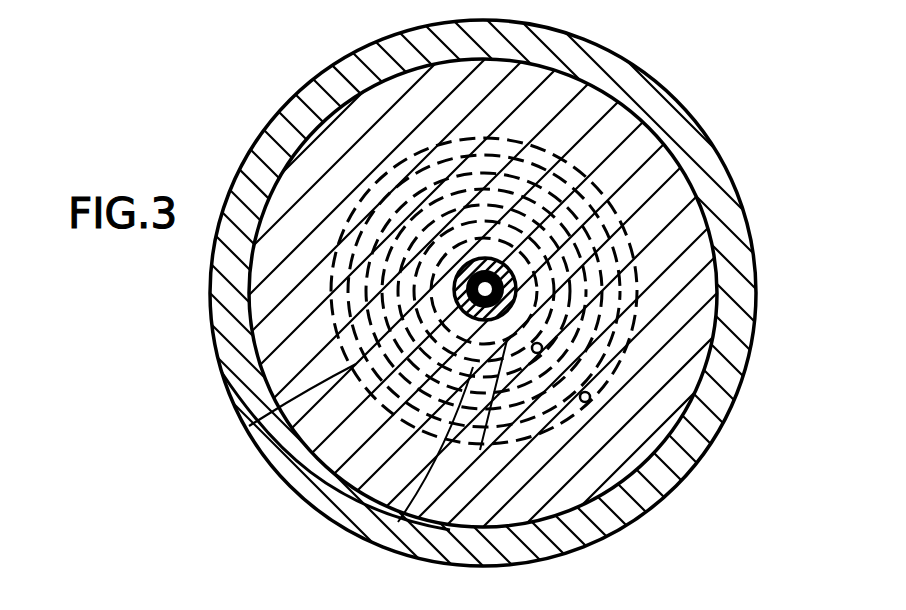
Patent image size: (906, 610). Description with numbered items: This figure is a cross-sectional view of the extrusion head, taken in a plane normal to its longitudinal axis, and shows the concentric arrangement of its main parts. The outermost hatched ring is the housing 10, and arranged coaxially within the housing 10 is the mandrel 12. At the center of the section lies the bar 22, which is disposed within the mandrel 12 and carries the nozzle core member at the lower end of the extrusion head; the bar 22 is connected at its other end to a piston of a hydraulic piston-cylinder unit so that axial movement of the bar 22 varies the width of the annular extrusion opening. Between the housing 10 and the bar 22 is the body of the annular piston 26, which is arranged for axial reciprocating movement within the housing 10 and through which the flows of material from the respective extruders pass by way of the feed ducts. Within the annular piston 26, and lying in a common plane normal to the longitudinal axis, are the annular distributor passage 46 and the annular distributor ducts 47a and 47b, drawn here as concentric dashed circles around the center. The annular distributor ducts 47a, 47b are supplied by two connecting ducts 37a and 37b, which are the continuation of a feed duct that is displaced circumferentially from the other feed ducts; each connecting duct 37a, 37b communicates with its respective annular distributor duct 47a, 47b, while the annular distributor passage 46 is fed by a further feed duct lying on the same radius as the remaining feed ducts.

The housing 10 is at (650, 107).
The mandrel 12 is at (565, 178).
The bar 22 is at (515, 270).
The annular piston 26 is at (583, 110).
The connecting duct 37a is at (592, 396).
The connecting duct 37b is at (544, 349).
The annular distributor passage 46 is at (302, 492).
The annular distributor duct 47a is at (249, 426).
The annular distributor duct 47b is at (393, 532).